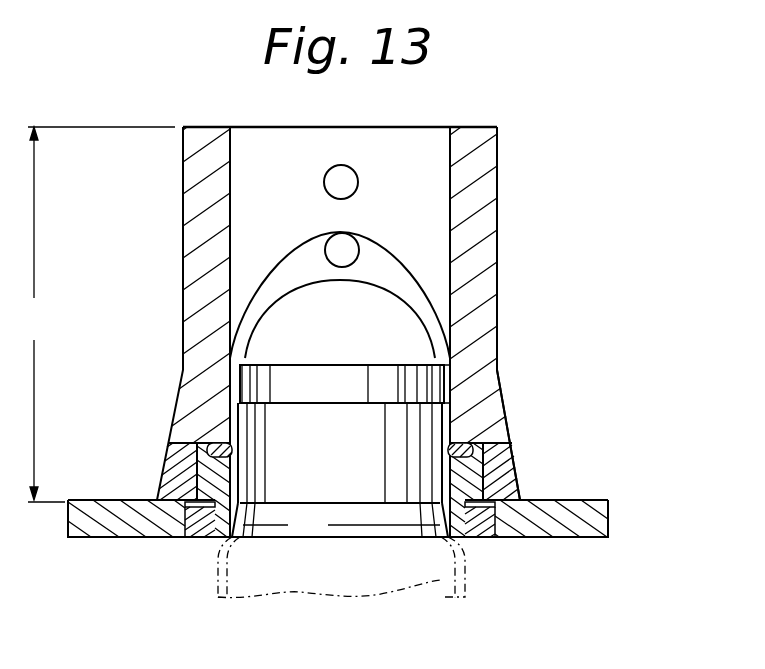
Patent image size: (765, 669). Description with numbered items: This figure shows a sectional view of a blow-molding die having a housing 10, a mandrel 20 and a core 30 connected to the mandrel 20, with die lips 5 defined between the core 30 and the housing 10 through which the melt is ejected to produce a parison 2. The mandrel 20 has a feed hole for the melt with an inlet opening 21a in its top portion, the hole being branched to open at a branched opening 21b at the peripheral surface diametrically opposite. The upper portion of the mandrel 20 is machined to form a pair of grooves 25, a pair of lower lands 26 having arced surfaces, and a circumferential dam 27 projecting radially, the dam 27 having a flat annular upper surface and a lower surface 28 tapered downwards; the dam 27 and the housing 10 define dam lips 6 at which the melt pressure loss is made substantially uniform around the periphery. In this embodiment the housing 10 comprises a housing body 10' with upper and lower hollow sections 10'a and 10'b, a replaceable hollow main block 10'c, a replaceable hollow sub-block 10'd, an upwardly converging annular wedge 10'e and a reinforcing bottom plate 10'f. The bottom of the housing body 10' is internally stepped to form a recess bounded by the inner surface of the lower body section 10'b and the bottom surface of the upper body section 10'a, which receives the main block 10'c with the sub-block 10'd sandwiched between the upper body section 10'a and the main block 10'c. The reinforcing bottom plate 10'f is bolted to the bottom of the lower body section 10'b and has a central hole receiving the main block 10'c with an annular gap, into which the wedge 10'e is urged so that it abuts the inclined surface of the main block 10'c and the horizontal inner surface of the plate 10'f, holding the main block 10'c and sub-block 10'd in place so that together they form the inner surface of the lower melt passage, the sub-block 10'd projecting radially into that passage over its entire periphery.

The parison 2 is at (218, 582).
The die lips 5 is at (453, 585).
The dam lips 6 is at (452, 383).
The housing 10 is at (364, 332).
The housing body 10' is at (98, 314).
The upper body section 10'a is at (542, 313).
The lower body section 10'b is at (378, 471).
The main block 10'c is at (157, 486).
The sub-block 10'd is at (398, 430).
The wedge 10'e is at (515, 548).
The reinforcing bottom plate 10'f is at (379, 518).
The mandrel 20 is at (413, 127).
The inlet opening 21a is at (344, 182).
The branched opening 21b is at (345, 250).
The grooves 25 is at (396, 286).
The lower lands 26 is at (378, 349).
The dam 27 is at (339, 401).
The lower surface 28 is at (344, 471).
The core 30 is at (326, 532).